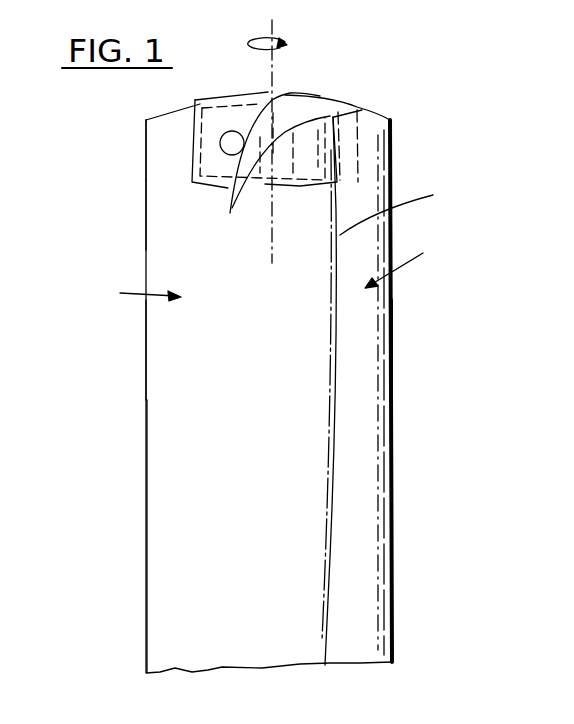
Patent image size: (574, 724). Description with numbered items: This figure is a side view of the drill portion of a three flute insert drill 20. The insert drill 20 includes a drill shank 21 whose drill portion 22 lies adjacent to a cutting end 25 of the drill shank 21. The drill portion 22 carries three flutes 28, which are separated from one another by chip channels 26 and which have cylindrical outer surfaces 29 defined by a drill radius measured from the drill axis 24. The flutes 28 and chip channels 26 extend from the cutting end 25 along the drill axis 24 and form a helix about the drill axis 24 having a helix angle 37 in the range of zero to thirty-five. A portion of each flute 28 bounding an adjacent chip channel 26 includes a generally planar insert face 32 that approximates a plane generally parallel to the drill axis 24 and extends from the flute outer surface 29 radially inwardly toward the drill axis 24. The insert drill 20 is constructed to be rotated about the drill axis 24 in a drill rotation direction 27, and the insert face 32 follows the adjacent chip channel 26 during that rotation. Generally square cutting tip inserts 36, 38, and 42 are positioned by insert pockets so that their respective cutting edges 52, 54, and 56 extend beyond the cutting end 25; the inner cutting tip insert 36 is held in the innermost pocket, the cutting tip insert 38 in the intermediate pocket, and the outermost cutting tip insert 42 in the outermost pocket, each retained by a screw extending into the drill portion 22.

The insert drill 20 is at (412, 148).
The drill shank 21 is at (180, 538).
The drill portion 22 is at (380, 462).
The drill axis 24 is at (272, 25).
The cutting end 25 is at (368, 122).
The chip channels 26 is at (269, 275).
The drill rotation direction 27 is at (282, 50).
The flutes 28 is at (150, 345).
The cylindrical outer surfaces 29 is at (145, 215).
The insert face 32 is at (167, 158).
The inner cutting tip insert 36 is at (206, 118).
The helix angle 37 is at (345, 533).
The cutting tip insert 38 is at (289, 97).
The outermost cutting tip insert 42 is at (340, 106).
The cutting edge 52 is at (222, 100).
The cutting edge 54 is at (310, 103).
The cutting edge 56 is at (335, 100).